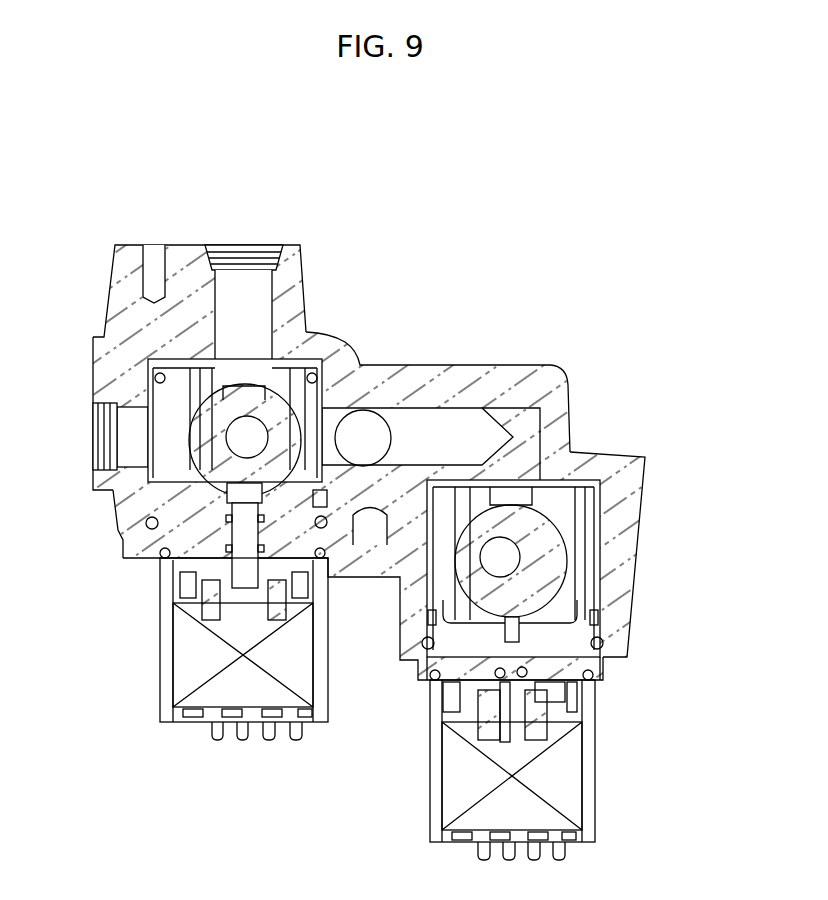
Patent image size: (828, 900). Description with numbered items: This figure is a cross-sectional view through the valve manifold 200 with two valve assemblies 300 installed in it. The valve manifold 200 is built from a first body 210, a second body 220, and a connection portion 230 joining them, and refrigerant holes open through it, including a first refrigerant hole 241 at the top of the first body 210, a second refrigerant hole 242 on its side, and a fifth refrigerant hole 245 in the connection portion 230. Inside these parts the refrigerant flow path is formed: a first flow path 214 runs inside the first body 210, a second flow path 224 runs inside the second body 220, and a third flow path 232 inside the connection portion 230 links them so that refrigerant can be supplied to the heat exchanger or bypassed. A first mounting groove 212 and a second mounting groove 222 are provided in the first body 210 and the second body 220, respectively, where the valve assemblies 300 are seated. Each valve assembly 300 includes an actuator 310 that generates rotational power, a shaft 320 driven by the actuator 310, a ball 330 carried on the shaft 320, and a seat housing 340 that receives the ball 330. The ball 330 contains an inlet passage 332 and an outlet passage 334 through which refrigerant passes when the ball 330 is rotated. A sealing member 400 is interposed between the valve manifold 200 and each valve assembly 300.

The valve manifold 200 is at (561, 350).
The first body 210 is at (125, 287).
The first mounting groove 212 is at (153, 512).
The first flow path 214 is at (270, 297).
The second body 220 is at (620, 622).
The second mounting groove 222 is at (598, 596).
The second flow path 224 is at (538, 452).
The connection portion 230 is at (518, 364).
The third flow path 232 is at (451, 417).
The first refrigerant hole 241 is at (230, 243).
The second refrigerant hole 242 is at (95, 456).
The fifth refrigerant hole 245 is at (372, 424).
The valve assembly 300 is at (652, 746).
The actuator 310 is at (190, 683).
The shaft 320 is at (205, 622).
The ball 330 is at (160, 541).
The inlet passage 332 is at (257, 414).
The outlet passage 334 is at (230, 381).
The seat housing 340 is at (283, 377).
The sealing member 400 is at (146, 523).